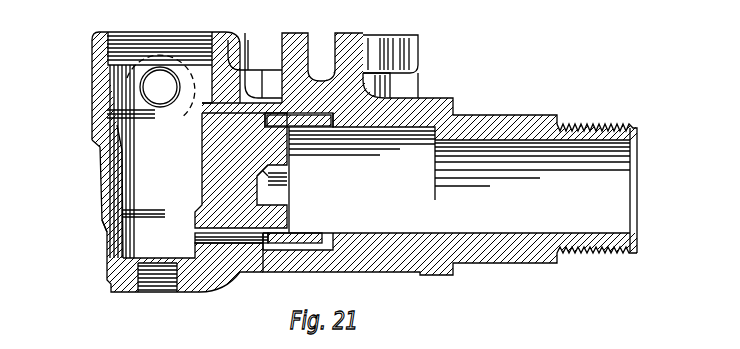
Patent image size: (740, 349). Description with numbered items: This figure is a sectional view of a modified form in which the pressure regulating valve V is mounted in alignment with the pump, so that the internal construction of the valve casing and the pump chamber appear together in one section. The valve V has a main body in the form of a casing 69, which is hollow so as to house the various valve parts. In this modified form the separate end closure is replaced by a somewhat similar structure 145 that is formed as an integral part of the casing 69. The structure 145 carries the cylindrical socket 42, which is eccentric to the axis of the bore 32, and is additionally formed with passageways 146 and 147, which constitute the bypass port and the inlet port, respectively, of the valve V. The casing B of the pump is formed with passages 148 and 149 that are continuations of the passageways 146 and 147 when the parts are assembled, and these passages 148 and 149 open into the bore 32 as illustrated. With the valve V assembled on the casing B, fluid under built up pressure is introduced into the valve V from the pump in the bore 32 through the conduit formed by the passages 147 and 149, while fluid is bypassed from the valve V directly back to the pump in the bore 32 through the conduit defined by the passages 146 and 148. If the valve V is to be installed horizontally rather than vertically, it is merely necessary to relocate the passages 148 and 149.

The pressure regulating valve V is at (83, 174).
The casing B is at (431, 98).
The casing 69 is at (102, 231).
The structure 145 is at (218, 171).
The passageway 146 is at (203, 110).
The passageway 147 is at (200, 240).
The passage 148 is at (305, 131).
The passage 149 is at (302, 245).
The cylindrical socket 42 is at (276, 196).
The bore 32 is at (376, 233).